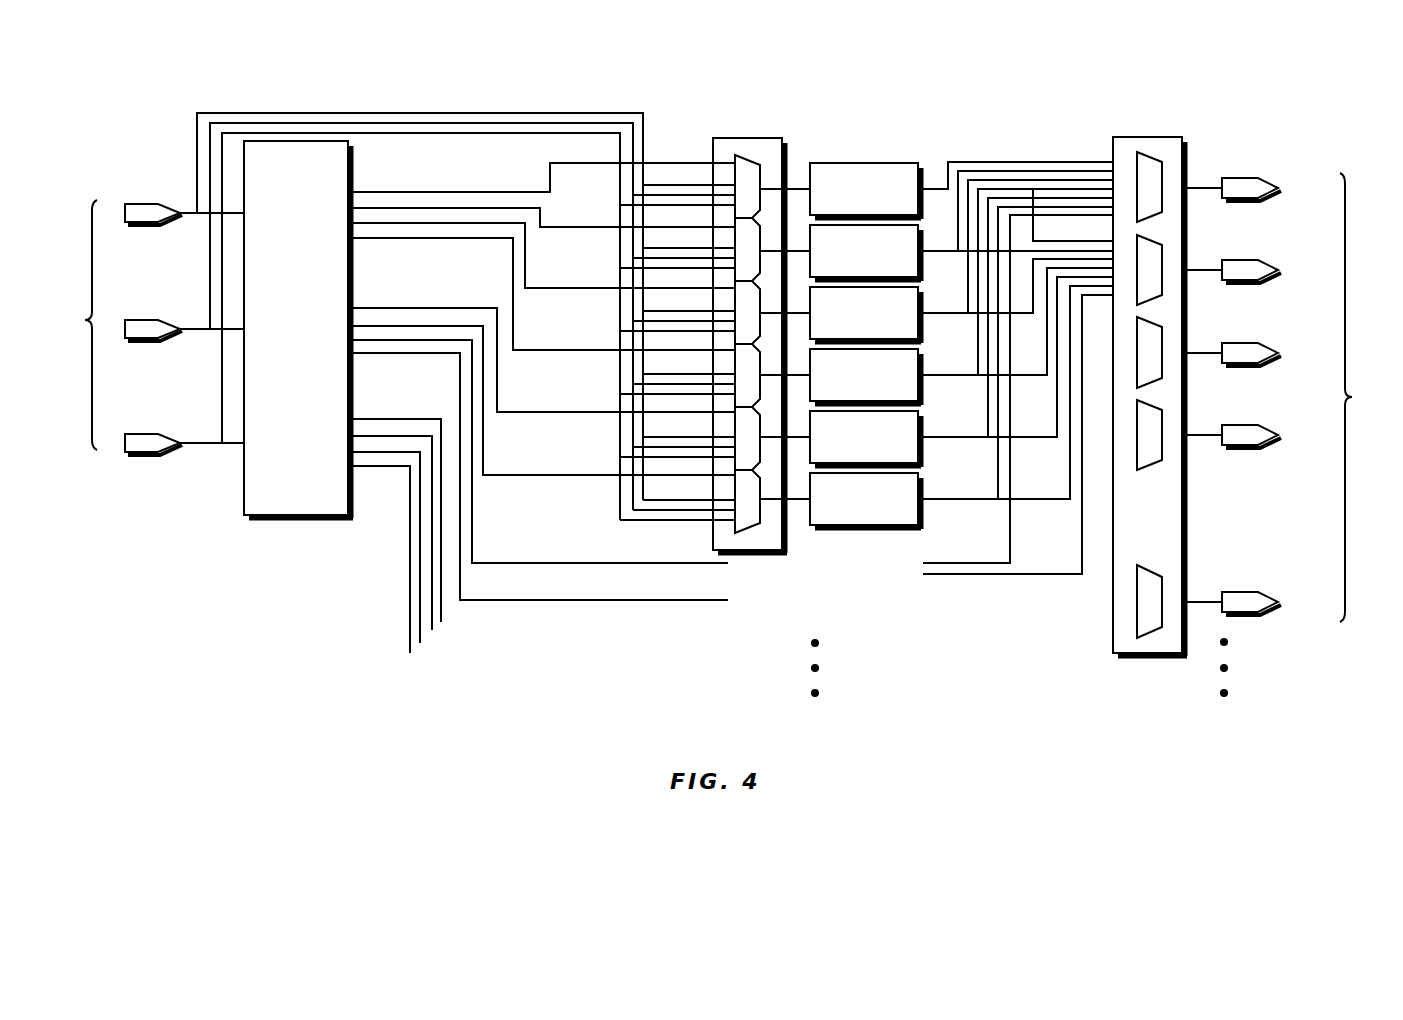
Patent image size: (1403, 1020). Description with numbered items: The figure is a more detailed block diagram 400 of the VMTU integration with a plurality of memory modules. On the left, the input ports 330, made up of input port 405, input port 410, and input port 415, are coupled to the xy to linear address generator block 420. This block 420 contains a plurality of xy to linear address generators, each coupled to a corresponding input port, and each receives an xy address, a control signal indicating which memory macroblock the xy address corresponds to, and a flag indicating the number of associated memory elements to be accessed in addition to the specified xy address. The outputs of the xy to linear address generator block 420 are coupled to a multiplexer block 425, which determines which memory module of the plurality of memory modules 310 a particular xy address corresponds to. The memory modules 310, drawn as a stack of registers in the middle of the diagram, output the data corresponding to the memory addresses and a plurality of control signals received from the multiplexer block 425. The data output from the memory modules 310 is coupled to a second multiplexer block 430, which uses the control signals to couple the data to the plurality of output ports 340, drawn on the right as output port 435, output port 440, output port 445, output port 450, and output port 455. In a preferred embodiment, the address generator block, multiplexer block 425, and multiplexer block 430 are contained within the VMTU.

The block diagram 400 is at (104, 644).
The input port 405 is at (133, 225).
The input port 410 is at (133, 341).
The input port 415 is at (133, 455).
The input ports 330 is at (68, 325).
The xy to linear address generator block 420 is at (357, 540).
The multiplexer block 425 is at (787, 131).
The memory modules 310 is at (927, 545).
The multiplexer block 430 is at (1153, 659).
The output port 435 is at (1243, 200).
The output port 440 is at (1243, 282).
The output port 445 is at (1243, 365).
The output port 450 is at (1243, 447).
The output port 455 is at (1243, 614).
The output ports 340 is at (1369, 397).